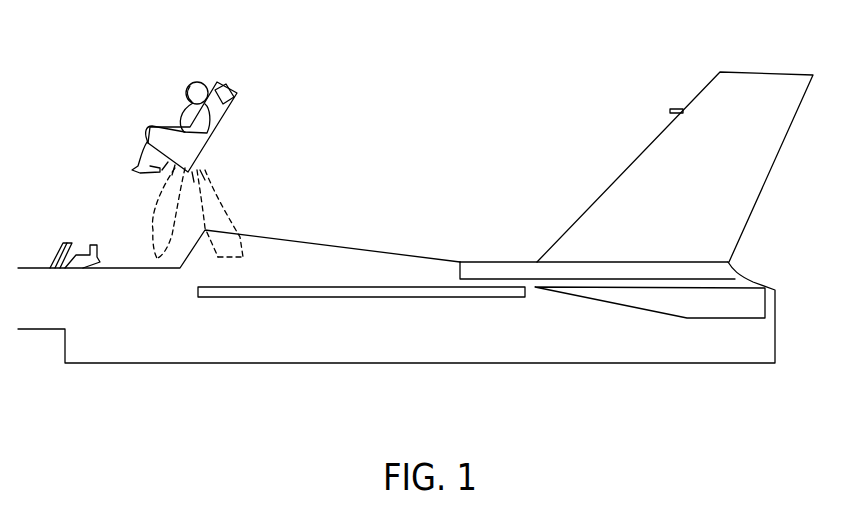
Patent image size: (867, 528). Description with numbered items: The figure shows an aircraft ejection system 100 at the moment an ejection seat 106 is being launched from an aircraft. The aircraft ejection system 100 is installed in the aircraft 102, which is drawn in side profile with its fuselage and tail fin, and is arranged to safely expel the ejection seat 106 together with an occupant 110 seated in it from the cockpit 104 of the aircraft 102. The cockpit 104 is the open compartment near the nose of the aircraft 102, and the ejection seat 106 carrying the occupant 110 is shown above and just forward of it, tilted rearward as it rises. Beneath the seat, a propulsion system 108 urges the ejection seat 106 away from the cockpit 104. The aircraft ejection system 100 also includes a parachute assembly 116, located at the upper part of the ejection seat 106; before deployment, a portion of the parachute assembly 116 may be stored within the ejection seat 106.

The aircraft ejection system 100 is at (318, 150).
The aircraft 102 is at (425, 335).
The cockpit 104 is at (117, 257).
The ejection seat 106 is at (205, 147).
The propulsion system 108 is at (212, 190).
The occupant 110 is at (190, 82).
The parachute assembly 116 is at (233, 92).